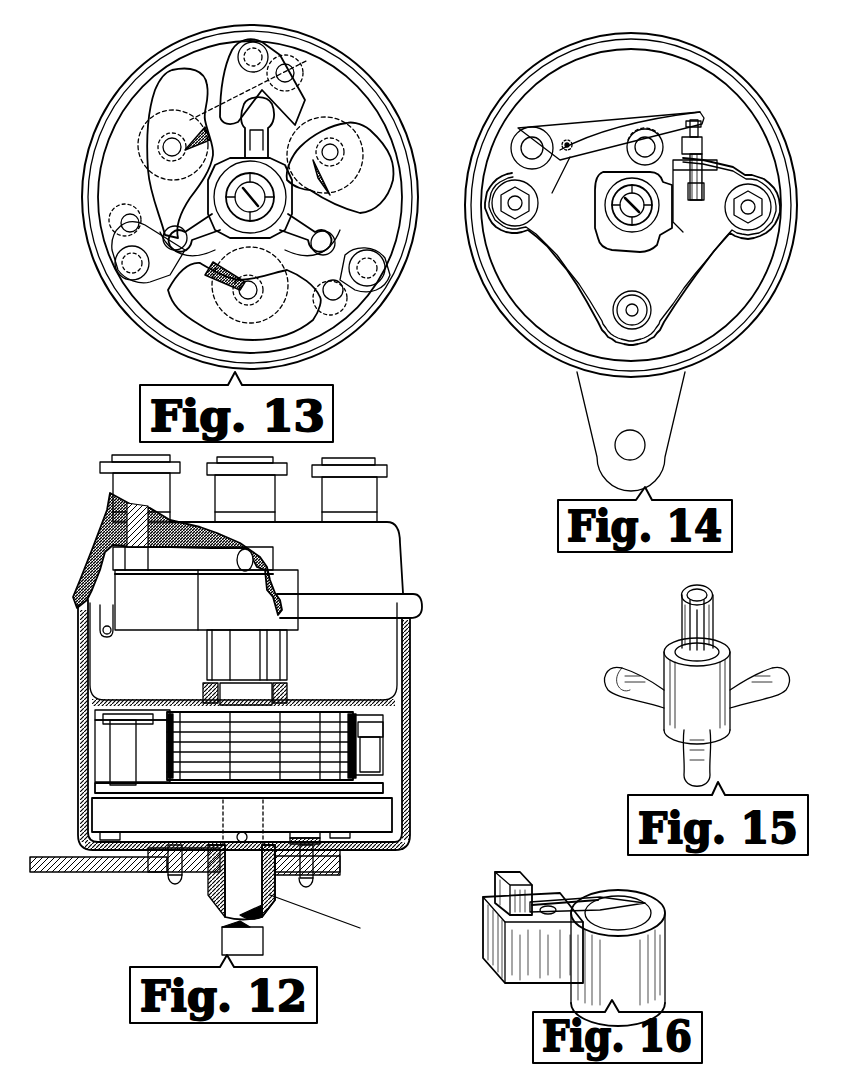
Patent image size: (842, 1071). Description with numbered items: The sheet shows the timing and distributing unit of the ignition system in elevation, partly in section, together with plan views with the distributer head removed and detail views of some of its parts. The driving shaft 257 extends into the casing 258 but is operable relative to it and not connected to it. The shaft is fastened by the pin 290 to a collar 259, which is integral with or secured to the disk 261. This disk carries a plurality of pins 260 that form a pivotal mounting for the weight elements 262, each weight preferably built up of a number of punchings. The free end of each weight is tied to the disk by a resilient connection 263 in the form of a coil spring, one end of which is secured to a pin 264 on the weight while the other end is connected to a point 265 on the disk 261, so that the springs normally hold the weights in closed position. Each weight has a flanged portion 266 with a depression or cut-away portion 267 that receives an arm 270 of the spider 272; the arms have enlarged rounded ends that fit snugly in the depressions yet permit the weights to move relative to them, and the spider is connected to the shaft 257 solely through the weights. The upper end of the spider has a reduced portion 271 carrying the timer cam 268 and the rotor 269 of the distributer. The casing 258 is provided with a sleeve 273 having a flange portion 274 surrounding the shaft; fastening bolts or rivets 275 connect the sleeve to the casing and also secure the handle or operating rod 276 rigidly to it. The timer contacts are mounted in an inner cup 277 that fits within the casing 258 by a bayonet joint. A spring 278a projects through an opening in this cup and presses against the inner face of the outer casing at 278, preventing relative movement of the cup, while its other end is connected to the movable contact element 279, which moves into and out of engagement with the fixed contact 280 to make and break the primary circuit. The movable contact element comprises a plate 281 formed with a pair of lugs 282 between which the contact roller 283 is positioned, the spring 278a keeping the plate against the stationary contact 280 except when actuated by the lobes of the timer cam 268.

In FIG. 12, the shaft 257 is at (245, 895).
In FIG. 12, the casing 258 is at (410, 783).
In FIG. 12, the collar 259 is at (220, 842).
In FIG. 12, the pins 260 is at (365, 755).
In FIG. 12, the disk 261 is at (370, 813).
In FIG. 13, the weight elements 262 is at (130, 173).
In FIG. 12, the weight elements 262 is at (265, 748).
In FIG. 13, the resilient or flexible connection 263 is at (322, 188).
In FIG. 13, the pin 264 is at (332, 150).
In FIG. 13, the points 265 is at (343, 292).
In FIG. 13, the flanged portion 266 is at (160, 272).
In FIG. 13, the depression or cut-away portion 267 is at (162, 268).
In FIG. 13, the timer cam 268 is at (268, 155).
In FIG. 14, the timer cam 268 is at (603, 230).
In FIG. 12, the timer cam 268 is at (275, 655).
In FIG. 12, the rotor 269 is at (170, 608).
In FIG. 16, the rotor 269 is at (622, 967).
In FIG. 13, the arm 270 is at (312, 246).
In FIG. 15, the arm 270 is at (697, 775).
In FIG. 15, the reduced portion 271 is at (710, 625).
In FIG. 15, the spider 272 is at (672, 683).
In FIG. 12, the sleeve 273 is at (337, 920).
In FIG. 12, the flange portion 274 is at (340, 865).
In FIG. 12, the fastening bolts or rivets 275 is at (170, 880).
In FIG. 12, the handle or operating rod 276 is at (95, 878).
In FIG. 14, the casing or cup 277 is at (758, 300).
In FIG. 12, the casing or cup 277 is at (400, 628).
In FIG. 14, the inner face of the outer casing 278 is at (642, 48).
In FIG. 14, the spring 278a is at (545, 82).
In FIG. 14, the movable contact element 279 is at (630, 118).
In FIG. 14, the fixed contact 280 is at (704, 150).
In FIG. 14, the plate 281 is at (600, 130).
In FIG. 14, the lugs 282 is at (655, 140).
In FIG. 14, the contact roller 283 is at (632, 156).
In FIG. 12, the pin 290 is at (240, 832).